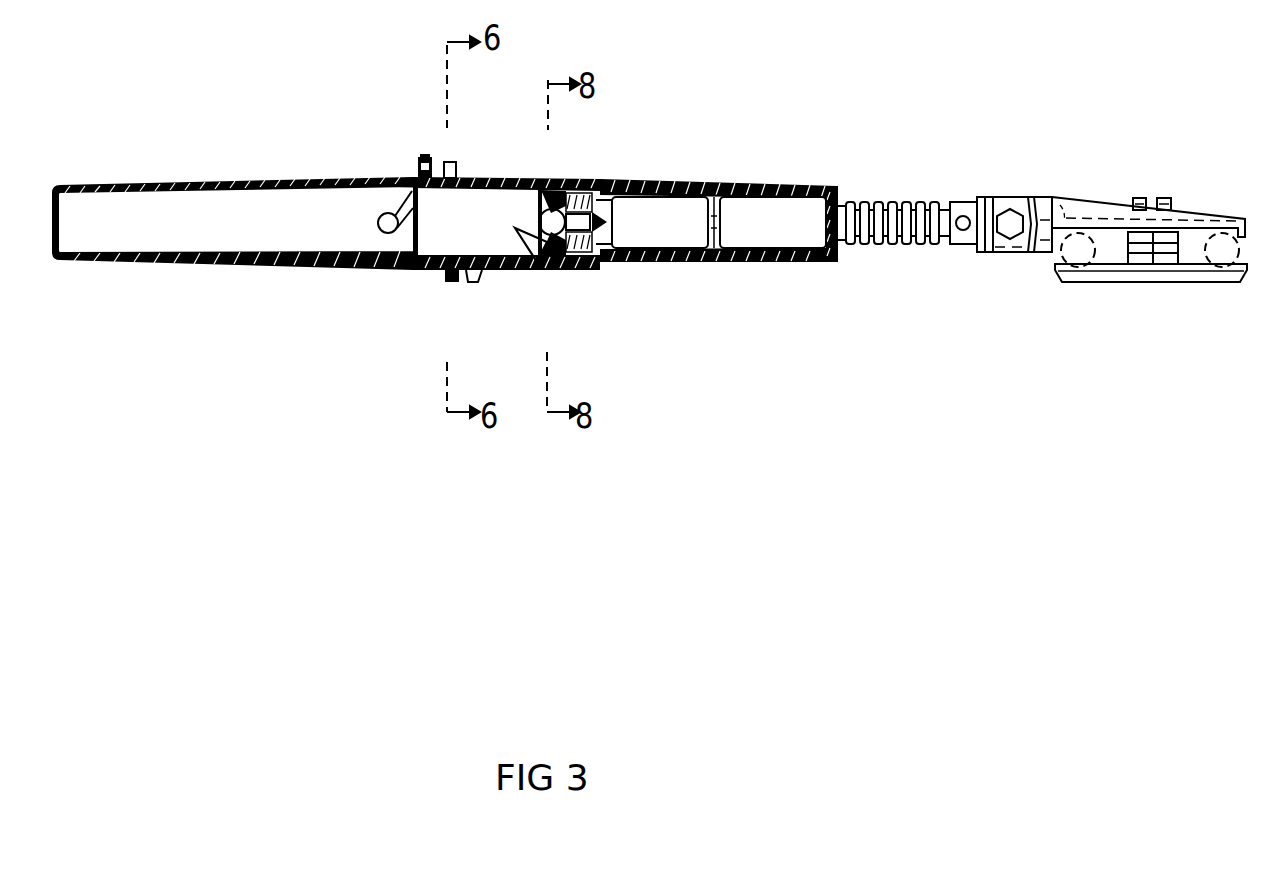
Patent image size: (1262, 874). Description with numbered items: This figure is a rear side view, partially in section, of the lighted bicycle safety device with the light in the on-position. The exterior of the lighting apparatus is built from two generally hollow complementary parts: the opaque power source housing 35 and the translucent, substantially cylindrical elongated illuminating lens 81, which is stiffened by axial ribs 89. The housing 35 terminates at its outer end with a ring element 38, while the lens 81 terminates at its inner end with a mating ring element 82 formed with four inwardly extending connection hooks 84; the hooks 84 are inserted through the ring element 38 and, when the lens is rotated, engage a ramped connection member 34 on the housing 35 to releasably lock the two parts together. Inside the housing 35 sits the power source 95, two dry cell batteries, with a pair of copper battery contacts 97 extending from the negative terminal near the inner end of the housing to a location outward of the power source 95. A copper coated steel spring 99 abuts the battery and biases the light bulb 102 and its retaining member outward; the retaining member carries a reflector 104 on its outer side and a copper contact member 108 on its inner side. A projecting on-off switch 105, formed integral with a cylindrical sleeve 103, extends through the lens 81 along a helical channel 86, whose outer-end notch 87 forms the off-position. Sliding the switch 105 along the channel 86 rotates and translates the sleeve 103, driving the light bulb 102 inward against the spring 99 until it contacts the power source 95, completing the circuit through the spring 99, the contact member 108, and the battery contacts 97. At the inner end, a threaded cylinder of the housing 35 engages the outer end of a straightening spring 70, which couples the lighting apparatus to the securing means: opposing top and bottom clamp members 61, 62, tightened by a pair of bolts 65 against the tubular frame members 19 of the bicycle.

The elongated illuminating lens 81 is at (148, 185).
The axial ribs 89 is at (178, 262).
The helical channel 86 is at (382, 214).
The notch 87 is at (385, 232).
The projecting on-off switch 105 is at (420, 158).
The mating ring element 82 is at (427, 155).
The ring element 38 is at (451, 162).
The light bulb 102 is at (547, 188).
The copper contact member 108 is at (590, 193).
The battery contacts 97 is at (622, 182).
The power source housing 35 is at (790, 186).
The straightening spring 70 is at (912, 204).
The top clamp member 61 is at (1082, 218).
The bolts 65 is at (1151, 198).
The sleeve 103 is at (430, 248).
The ramped connection member 34 is at (455, 282).
The connection hooks 84 is at (474, 282).
The reflector 104 is at (532, 264).
The spring 99 is at (612, 262).
The power source 95 is at (676, 232).
The frame members 19 is at (1075, 250).
The bottom clamp member 62 is at (1118, 282).